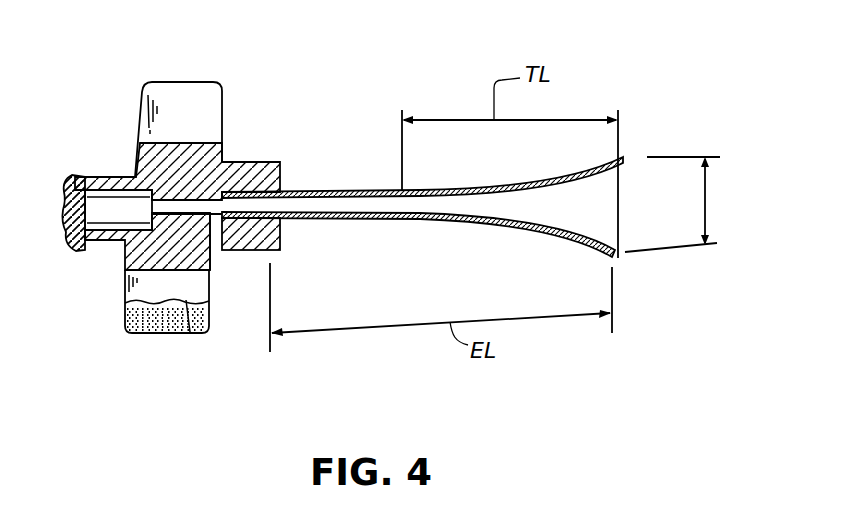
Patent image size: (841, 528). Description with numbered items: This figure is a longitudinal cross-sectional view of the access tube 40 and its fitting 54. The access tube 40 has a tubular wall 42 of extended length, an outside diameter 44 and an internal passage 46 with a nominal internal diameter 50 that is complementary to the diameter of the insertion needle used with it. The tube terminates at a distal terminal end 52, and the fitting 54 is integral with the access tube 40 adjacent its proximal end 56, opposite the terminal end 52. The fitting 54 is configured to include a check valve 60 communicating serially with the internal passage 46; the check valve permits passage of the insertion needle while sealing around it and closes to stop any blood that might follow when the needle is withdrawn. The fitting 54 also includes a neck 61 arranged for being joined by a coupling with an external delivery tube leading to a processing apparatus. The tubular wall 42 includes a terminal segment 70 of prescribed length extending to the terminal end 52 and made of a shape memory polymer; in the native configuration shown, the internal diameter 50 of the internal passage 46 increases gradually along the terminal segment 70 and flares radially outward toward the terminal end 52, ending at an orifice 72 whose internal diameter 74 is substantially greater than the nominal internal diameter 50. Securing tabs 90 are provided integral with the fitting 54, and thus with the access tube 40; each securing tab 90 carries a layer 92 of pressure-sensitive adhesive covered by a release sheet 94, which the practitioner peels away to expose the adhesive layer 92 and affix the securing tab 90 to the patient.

The access tube 40 is at (390, 229).
The tubular wall 42 is at (440, 224).
The outside diameter 44 is at (345, 240).
The internal passage 46 is at (327, 205).
The nominal internal diameter 50 is at (293, 242).
The distal terminal end 52 is at (625, 163).
The fitting 54 is at (263, 160).
The proximal end 56 is at (212, 222).
The check valve 60 is at (70, 168).
The neck 61 is at (100, 240).
The terminal segment 70 is at (486, 185).
The orifice 72 is at (620, 200).
The internal diameter 74 is at (707, 205).
The securing tab 90 is at (143, 92).
The layer of pressure-sensitive adhesive 92 is at (160, 332).
The release sheet 94 is at (188, 332).